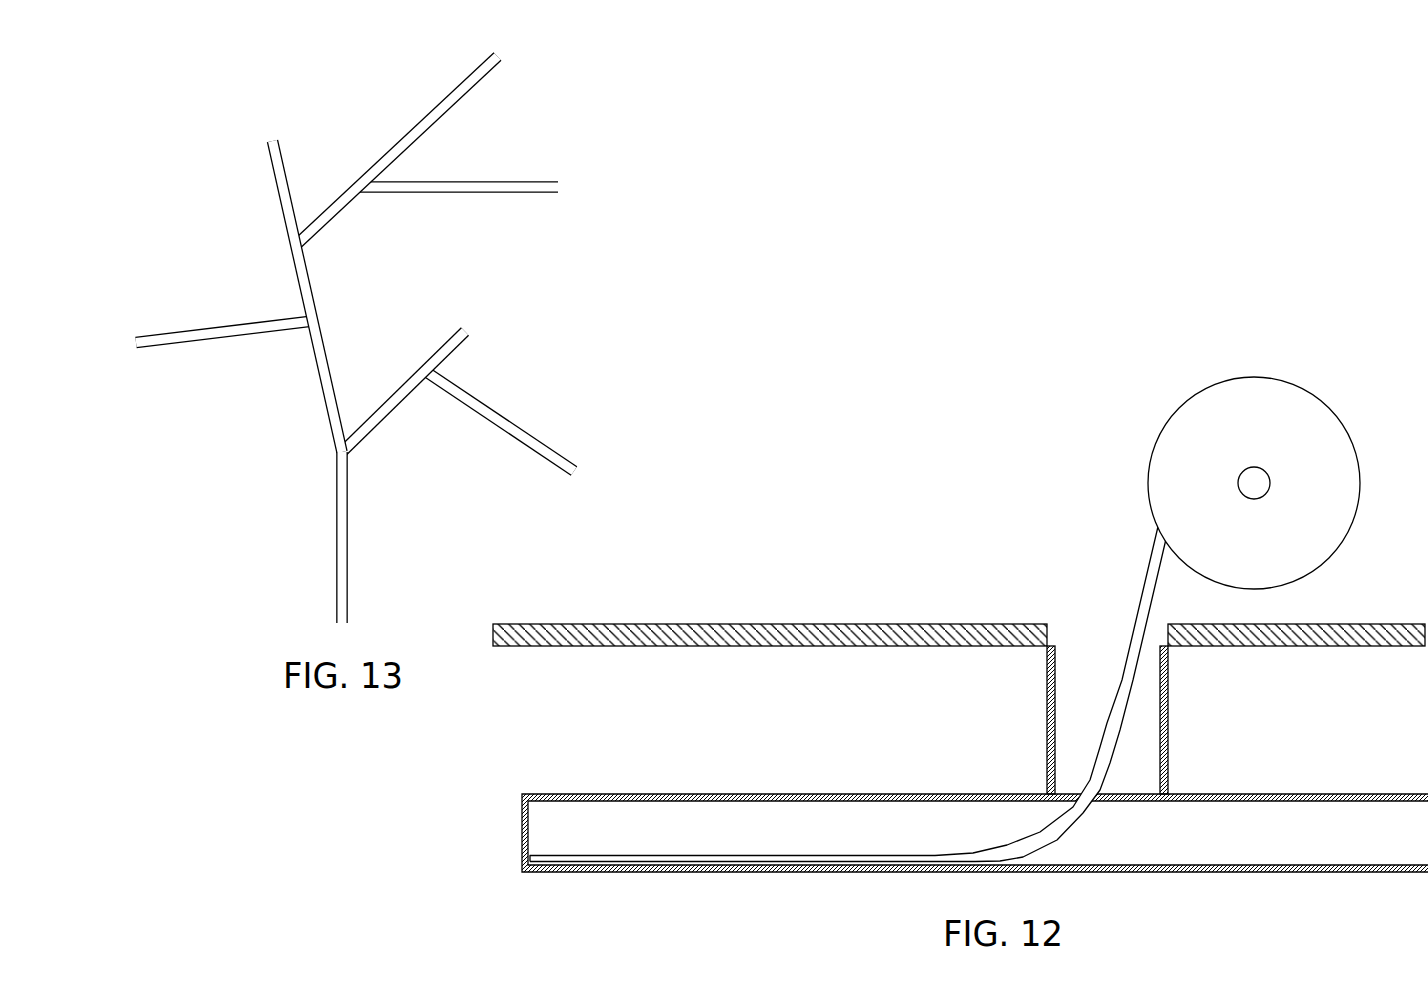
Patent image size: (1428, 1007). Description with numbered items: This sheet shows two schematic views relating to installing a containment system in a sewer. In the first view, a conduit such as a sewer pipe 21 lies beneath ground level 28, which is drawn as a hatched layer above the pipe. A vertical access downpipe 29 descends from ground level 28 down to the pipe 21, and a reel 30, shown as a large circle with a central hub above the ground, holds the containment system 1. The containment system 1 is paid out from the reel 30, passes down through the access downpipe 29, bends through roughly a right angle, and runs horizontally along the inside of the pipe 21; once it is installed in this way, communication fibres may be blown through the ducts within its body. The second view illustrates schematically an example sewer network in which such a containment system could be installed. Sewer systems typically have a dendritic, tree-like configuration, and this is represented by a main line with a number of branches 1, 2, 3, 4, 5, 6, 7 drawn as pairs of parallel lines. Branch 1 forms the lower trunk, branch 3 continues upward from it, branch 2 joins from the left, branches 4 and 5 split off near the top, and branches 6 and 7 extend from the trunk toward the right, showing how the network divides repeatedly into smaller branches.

In FIG. 13, the containment system 1 is at (362, 541).
In FIG. 12, the containment system 1 is at (793, 861).
In FIG. 13, the branch 2 is at (224, 319).
In FIG. 13, the branch 3 is at (290, 296).
In FIG. 13, the branch 4 is at (405, 151).
In FIG. 13, the branch 5 is at (459, 212).
In FIG. 13, the branch 6 is at (403, 382).
In FIG. 13, the branch 7 is at (506, 421).
In FIG. 12, the conduit 21 is at (790, 794).
In FIG. 12, the ground level 28 is at (772, 623).
In FIG. 12, the access downpipe 29 is at (1170, 758).
In FIG. 12, the reel 30 is at (1182, 483).